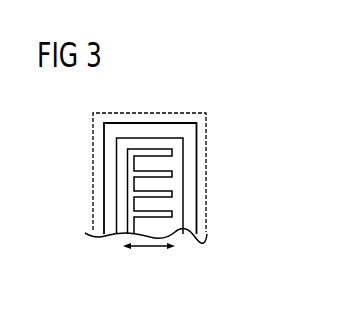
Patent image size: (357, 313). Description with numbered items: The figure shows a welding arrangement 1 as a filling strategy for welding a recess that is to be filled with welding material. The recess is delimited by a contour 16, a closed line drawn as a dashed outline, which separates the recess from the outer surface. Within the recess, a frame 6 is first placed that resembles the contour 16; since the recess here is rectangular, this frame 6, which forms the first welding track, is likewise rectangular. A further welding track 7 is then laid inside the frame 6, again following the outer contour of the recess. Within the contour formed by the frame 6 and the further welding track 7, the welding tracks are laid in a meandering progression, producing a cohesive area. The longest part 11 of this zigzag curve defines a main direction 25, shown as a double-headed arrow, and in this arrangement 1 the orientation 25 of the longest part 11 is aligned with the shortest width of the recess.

The sensor device 1 is at (186, 99).
The contour 16 is at (127, 112).
The frame 6 is at (197, 211).
The further welding track 7 is at (184, 185).
The longest extent of a welding track 11 is at (153, 149).
The main direction 25 is at (152, 249).